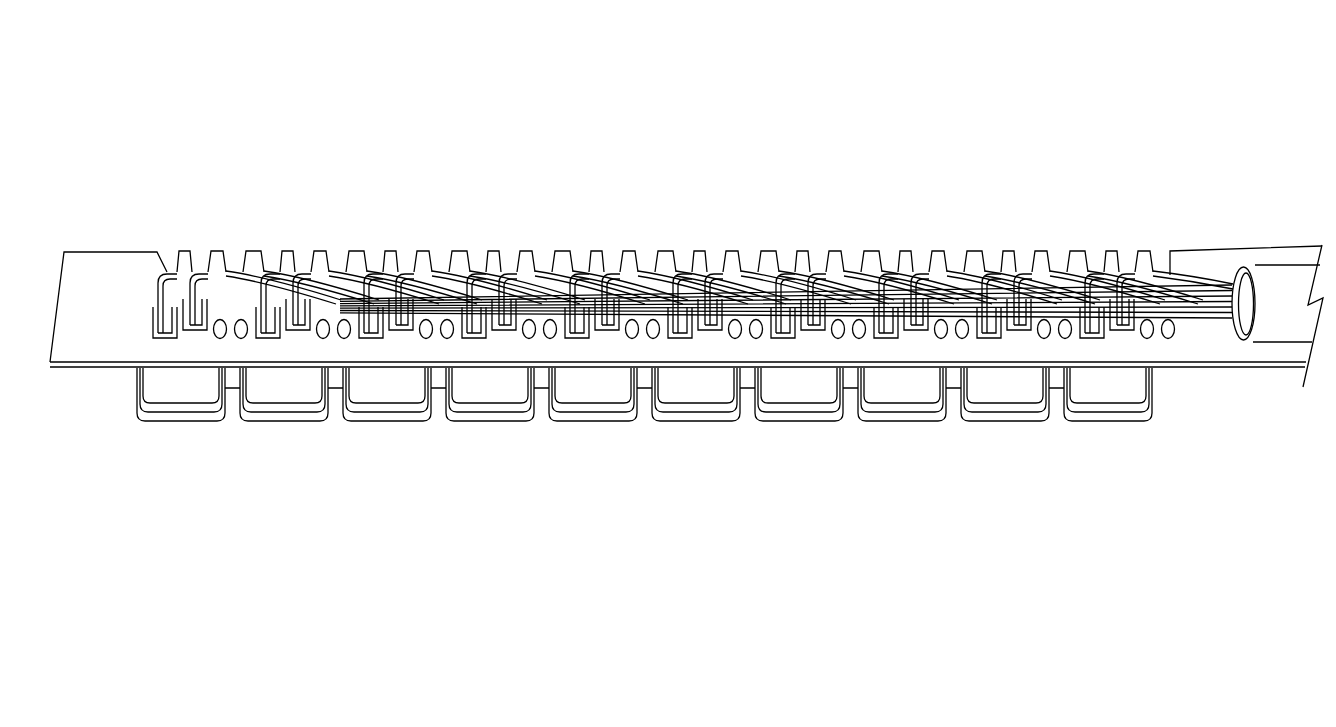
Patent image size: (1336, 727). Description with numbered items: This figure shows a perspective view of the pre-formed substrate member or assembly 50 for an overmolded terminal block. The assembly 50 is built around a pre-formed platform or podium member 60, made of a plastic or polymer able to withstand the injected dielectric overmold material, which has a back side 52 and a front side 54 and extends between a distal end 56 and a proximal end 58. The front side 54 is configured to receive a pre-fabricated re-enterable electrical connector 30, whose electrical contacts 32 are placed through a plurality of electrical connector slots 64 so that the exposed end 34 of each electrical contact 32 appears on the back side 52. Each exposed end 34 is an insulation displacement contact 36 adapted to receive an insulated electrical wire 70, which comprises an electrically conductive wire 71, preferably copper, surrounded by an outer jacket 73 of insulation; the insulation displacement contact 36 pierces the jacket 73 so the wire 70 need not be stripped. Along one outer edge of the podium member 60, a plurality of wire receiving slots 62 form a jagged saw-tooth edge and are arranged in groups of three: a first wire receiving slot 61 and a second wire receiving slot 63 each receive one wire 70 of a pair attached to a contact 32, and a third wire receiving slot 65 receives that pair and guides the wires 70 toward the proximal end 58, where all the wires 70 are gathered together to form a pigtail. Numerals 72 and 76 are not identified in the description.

The pre-formed substrate member or assembly 50 is at (194, 108).
The back side 52 is at (117, 270).
The front side 54 is at (101, 383).
The distal end 56 is at (61, 430).
The proximal end 58 is at (1267, 401).
The podium member 60 is at (1192, 371).
The re-enterable electrical connector 30 is at (189, 408).
The terminal module 72 is at (396, 371).
The electrically conductive wire 71 is at (472, 323).
The outer jacket 73 is at (478, 320).
The exposed end 34 is at (986, 278).
The insulation displacement contact 36 is at (604, 276).
The electrical contact 32 is at (621, 285).
The electrical connector slots 64 is at (688, 330).
The first wire receiving slot 61 is at (177, 237).
The second wire receiving slot 63 is at (198, 244).
The third wire receiving slot 65 is at (234, 237).
The insulated electrical wire 70 is at (452, 252).
The wire receiving slots 62 is at (855, 244).
The cable jacket 76 is at (1238, 237).